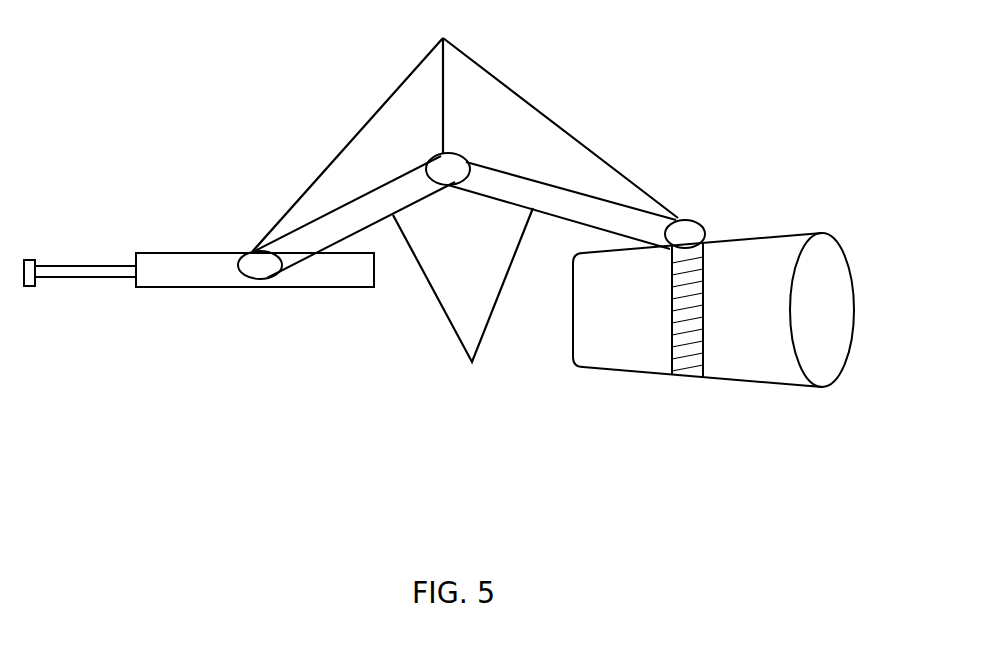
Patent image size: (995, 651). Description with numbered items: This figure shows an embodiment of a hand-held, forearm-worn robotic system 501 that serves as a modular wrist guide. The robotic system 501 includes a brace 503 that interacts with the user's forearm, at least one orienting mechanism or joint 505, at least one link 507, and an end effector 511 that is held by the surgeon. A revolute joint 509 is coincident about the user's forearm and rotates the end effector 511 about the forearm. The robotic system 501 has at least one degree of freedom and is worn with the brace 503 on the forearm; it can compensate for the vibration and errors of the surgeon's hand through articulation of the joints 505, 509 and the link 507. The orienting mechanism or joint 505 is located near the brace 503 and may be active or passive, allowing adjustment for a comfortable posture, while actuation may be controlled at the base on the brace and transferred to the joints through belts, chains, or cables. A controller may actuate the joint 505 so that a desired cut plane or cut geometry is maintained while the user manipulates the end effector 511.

The robotic system 501 is at (153, 81).
The brace 503 is at (817, 232).
The orienting mechanism or joint 505 is at (478, 141).
The link 507 is at (463, 304).
The revolute joint 509 is at (693, 377).
The end effector 511 is at (140, 287).